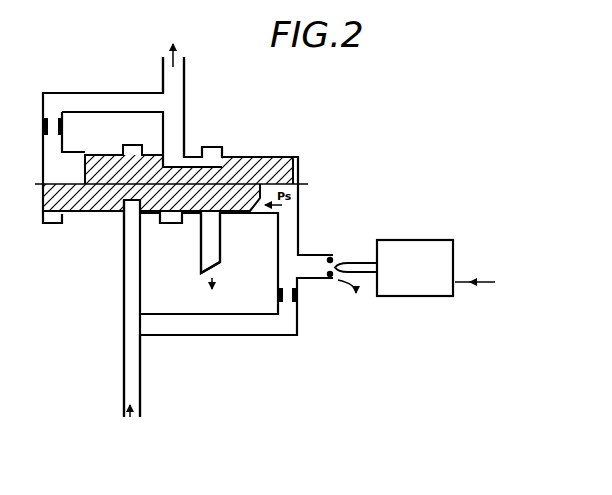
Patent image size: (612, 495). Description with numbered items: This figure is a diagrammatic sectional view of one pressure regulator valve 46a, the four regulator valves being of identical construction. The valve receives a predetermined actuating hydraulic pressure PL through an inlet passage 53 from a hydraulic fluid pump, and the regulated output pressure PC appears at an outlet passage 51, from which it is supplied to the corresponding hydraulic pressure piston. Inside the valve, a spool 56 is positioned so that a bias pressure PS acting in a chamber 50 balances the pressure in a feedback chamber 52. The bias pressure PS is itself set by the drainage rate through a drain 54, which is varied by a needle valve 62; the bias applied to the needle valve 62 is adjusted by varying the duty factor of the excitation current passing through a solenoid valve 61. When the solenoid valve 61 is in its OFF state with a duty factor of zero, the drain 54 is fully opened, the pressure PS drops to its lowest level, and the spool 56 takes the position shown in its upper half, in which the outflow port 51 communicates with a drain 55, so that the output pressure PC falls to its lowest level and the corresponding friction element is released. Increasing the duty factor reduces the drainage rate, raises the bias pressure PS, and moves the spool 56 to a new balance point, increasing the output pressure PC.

The pressure regulator valve 46a is at (135, 77).
The chamber 50 is at (300, 205).
The outlet passage 51 is at (178, 77).
The feedback chamber 52 is at (50, 155).
The inlet passage 53 is at (128, 387).
The drain 54 is at (340, 280).
The drain 55 is at (212, 253).
The spool 56 is at (96, 209).
The solenoid valve 61 is at (417, 247).
The needle valve 62 is at (360, 262).